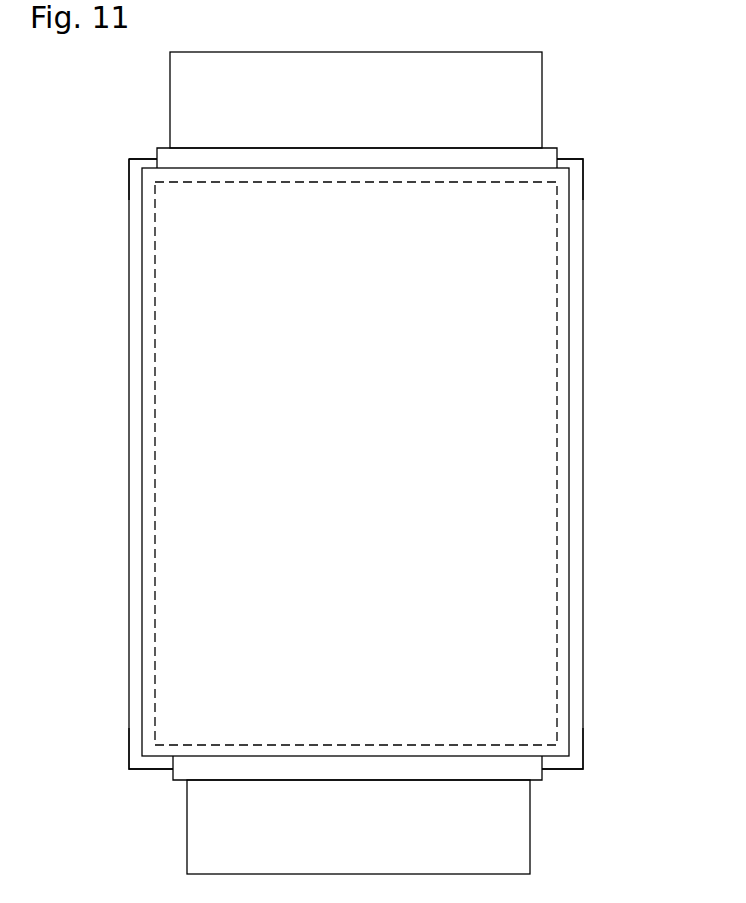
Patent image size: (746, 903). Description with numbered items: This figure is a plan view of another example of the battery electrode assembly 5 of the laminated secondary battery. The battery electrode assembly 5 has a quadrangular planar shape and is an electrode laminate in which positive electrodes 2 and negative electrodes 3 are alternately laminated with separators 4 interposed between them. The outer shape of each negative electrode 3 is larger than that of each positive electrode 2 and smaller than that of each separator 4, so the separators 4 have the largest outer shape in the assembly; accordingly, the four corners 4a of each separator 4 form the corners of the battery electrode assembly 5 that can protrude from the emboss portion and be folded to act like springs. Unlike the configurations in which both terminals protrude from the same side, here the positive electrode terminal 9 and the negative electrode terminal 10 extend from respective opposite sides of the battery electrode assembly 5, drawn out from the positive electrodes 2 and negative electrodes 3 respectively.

The positive electrode 2 is at (546, 483).
The negative electrode 3 is at (563, 414).
The separator 4 is at (578, 370).
The four corners 4a is at (137, 162).
The battery electrode assembly 5 is at (368, 463).
The positive electrode terminal 9 is at (503, 845).
The negative electrode terminal 10 is at (528, 108).